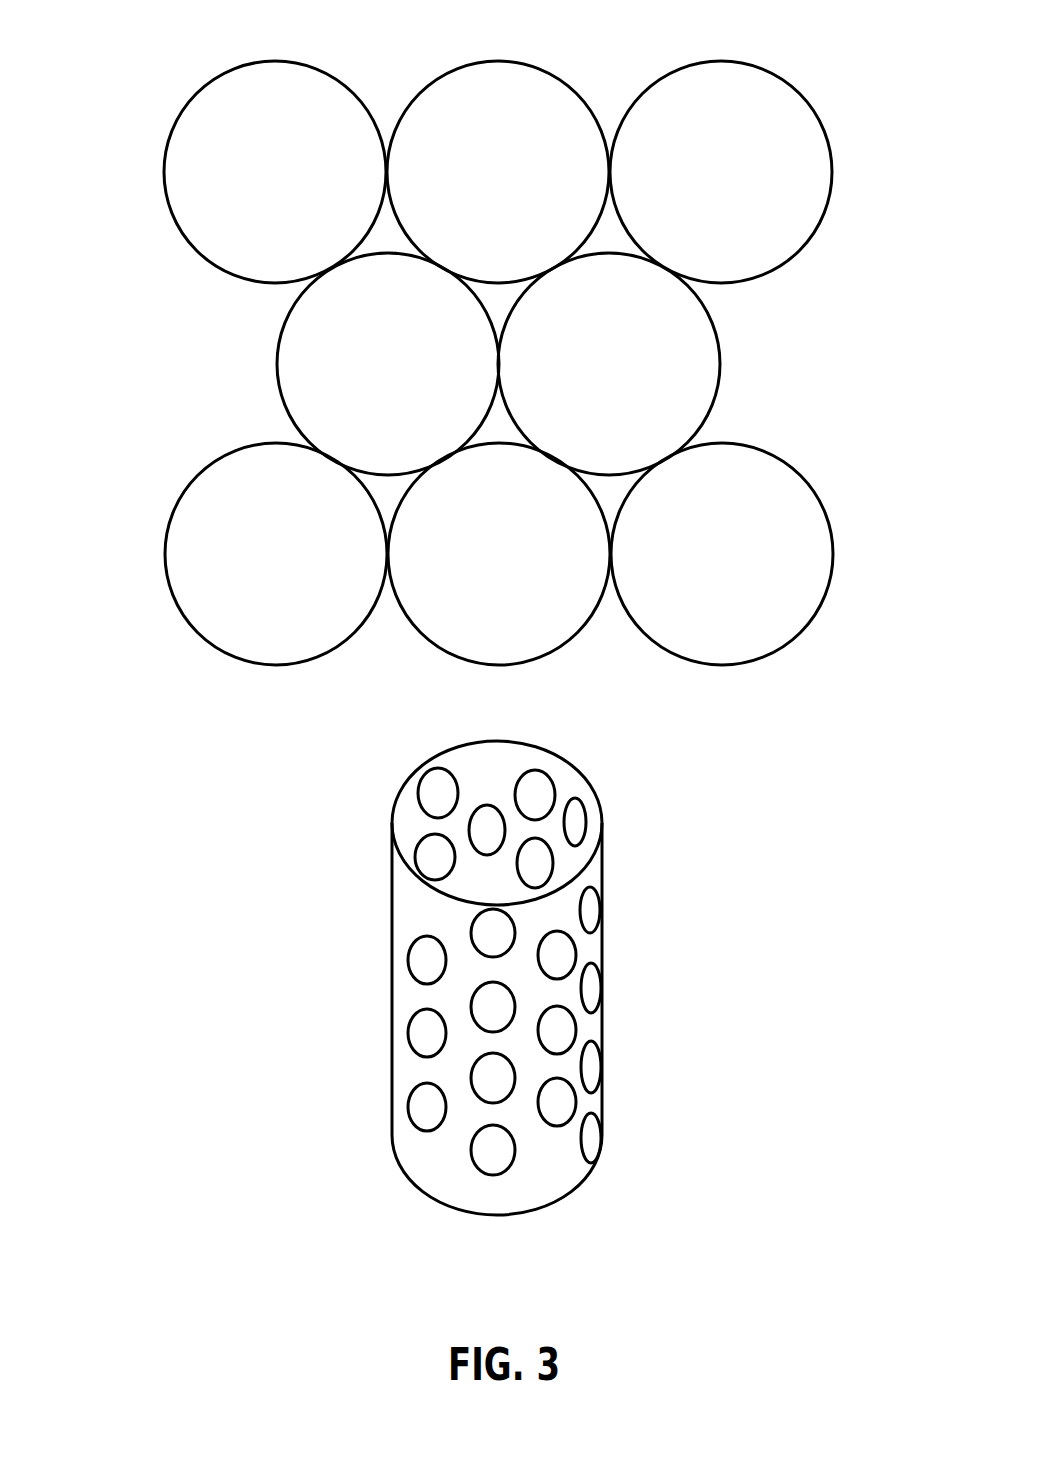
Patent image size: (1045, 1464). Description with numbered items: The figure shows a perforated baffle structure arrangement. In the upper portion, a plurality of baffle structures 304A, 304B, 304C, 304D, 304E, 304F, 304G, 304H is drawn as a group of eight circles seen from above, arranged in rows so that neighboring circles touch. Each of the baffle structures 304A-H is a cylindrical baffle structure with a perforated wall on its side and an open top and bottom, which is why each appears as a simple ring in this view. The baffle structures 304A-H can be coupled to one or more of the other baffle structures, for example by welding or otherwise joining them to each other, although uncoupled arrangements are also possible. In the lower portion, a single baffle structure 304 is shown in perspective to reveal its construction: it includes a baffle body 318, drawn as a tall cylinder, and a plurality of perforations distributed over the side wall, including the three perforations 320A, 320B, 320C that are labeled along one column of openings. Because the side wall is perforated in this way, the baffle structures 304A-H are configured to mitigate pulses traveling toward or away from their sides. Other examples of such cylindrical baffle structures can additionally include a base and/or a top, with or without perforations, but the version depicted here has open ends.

The baffle structure 304 is at (362, 978).
The baffle structure 304A is at (188, 250).
The baffle structure 304B is at (560, 78).
The baffle structure 304C is at (812, 105).
The baffle structure 304D is at (277, 374).
The baffle structure 304E is at (720, 374).
The baffle structure 304F is at (194, 631).
The baffle structure 304G is at (546, 661).
The baffle structure 304H is at (830, 520).
The baffle body 318 is at (400, 797).
The perforation 320A is at (430, 960).
The perforation 320B is at (430, 1033).
The perforation 320C is at (430, 1107).